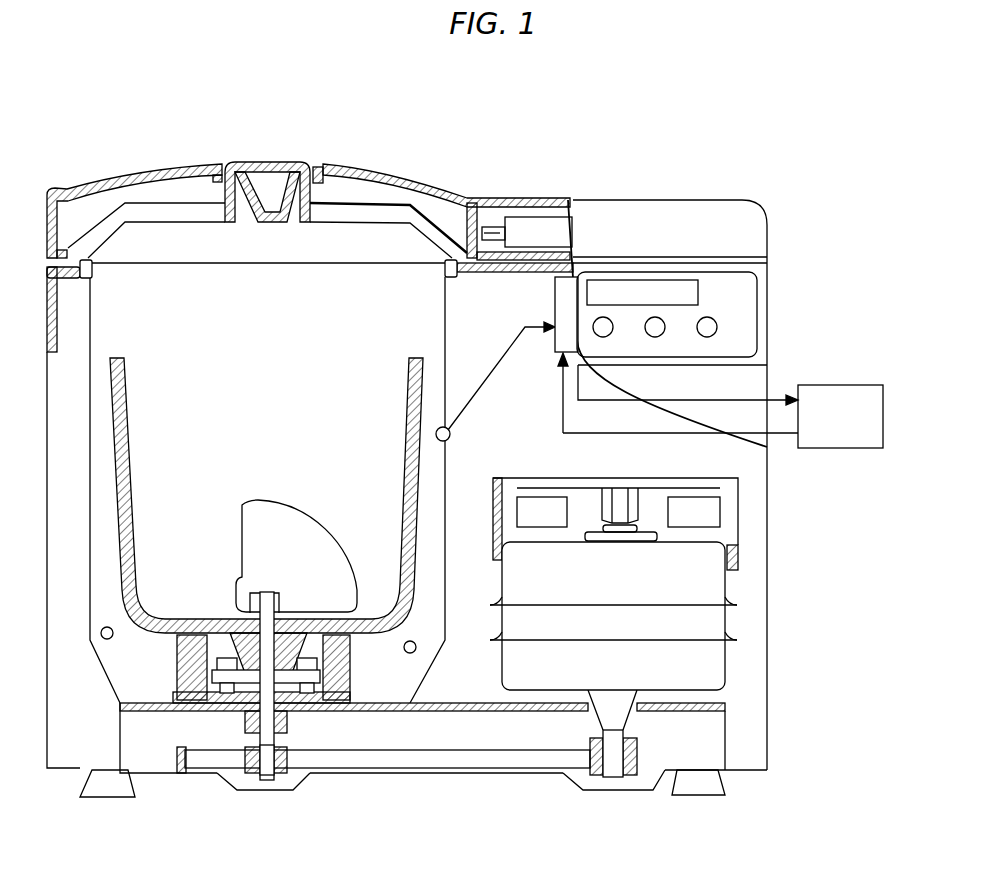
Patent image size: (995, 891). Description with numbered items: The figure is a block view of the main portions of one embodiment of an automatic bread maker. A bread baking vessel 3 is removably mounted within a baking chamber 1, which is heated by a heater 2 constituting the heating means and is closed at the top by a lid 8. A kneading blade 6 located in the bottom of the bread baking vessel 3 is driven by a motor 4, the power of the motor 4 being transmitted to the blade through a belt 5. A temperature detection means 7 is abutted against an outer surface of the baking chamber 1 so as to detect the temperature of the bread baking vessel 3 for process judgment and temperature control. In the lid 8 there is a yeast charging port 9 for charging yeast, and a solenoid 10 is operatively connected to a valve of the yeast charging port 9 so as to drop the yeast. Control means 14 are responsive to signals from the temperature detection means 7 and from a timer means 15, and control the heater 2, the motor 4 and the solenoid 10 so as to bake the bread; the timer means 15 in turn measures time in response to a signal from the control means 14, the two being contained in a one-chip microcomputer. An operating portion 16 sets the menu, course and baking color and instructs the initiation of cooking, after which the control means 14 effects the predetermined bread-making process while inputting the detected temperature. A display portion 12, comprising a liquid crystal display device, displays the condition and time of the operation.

The baking chamber 1 is at (90, 329).
The heater 2 is at (113, 637).
The bread baking vessel 3 is at (130, 440).
The motor 4 is at (723, 613).
The belt 5 is at (481, 749).
The kneading blade 6 is at (242, 537).
The temperature detection means 7 is at (451, 433).
The lid 8 is at (370, 168).
The yeast charging port 9 is at (275, 178).
The solenoid 10 is at (545, 215).
The display portion 12 is at (698, 288).
The control means 14 is at (555, 302).
The timer means 15 is at (883, 415).
The operating portion 16 is at (717, 328).